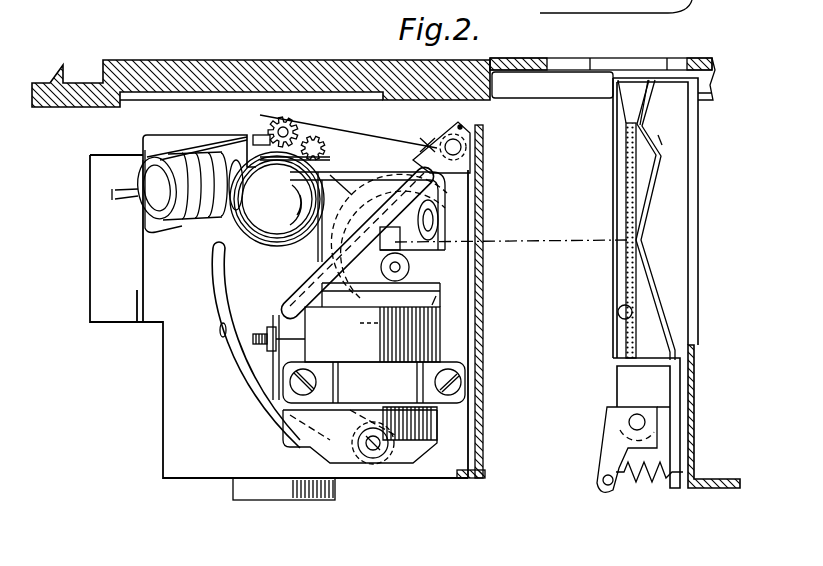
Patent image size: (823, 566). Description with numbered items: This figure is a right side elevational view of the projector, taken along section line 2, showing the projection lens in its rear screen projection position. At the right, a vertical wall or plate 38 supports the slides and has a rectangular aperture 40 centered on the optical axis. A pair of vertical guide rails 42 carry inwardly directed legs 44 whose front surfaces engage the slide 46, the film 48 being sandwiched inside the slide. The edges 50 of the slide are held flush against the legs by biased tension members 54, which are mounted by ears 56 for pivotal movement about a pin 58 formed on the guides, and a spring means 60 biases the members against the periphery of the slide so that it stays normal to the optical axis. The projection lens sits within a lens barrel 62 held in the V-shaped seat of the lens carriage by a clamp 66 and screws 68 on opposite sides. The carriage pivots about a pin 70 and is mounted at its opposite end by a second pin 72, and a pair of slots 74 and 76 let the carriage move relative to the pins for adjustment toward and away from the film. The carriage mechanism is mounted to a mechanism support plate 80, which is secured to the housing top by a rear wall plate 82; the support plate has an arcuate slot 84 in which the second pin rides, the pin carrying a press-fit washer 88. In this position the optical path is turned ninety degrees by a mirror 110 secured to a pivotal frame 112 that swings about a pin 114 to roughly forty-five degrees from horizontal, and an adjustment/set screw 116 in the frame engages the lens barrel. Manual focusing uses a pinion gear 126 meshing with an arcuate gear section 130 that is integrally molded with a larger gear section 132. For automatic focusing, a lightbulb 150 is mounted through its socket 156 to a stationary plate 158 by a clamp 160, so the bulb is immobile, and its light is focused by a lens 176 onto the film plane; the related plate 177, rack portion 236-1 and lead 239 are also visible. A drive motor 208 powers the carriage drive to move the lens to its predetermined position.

The section line 2 is at (58, 0).
The vertical wall or plate 38 is at (697, 388).
The rectangular aperture 40 is at (695, 165).
The vertical guide rails 42 is at (625, 385).
The inwardly directed legs 44 is at (635, 93).
The slide 46 is at (650, 186).
The film 48 is at (640, 282).
The edges of the slide 50 is at (636, 320).
The biased tension members 54 is at (660, 140).
The ears 56 is at (610, 463).
The pin 58 is at (628, 422).
The spring means 60 is at (650, 490).
The lens barrel 62 is at (372, 361).
The clamp 66 is at (395, 370).
The screws 68 is at (288, 398).
The pin 70 is at (405, 267).
The second pin 72 is at (382, 453).
The slot 74 is at (368, 460).
The slot 76 is at (455, 238).
The mechanism support plate 80 is at (279, 306).
The rear wall plate 82 is at (485, 428).
The arcuate slot 84 is at (223, 345).
The washer 88 is at (378, 458).
The mirror 110 is at (315, 280).
The pivotal frame 112 is at (437, 148).
The pin 114 is at (462, 150).
The adjustment/set screw 116 is at (278, 322).
The pinion gear 126 is at (296, 127).
The arcuate gear section 130 is at (330, 146).
The larger gear section 132 is at (375, 212).
The lightbulb 150 is at (277, 199).
The socket 156 is at (150, 205).
The stationary plate 158 is at (217, 158).
The clamp 160 is at (193, 225).
The lens 176 is at (437, 193).
The plate 177 is at (486, 190).
The drive motor 208 is at (266, 492).
The terminal 236-1 is at (348, 323).
The lead wire 239 is at (436, 296).